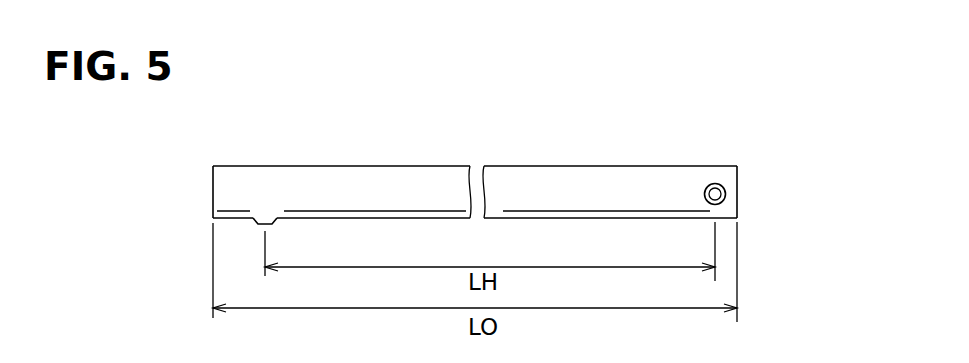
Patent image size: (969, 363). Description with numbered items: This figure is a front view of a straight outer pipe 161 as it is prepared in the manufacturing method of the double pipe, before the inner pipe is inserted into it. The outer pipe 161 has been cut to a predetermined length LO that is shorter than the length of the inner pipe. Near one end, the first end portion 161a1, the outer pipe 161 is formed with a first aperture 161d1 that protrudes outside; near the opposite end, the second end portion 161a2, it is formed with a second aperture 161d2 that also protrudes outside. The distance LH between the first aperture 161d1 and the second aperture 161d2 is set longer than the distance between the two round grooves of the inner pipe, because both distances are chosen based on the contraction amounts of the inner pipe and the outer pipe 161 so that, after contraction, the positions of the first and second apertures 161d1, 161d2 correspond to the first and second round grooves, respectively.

The outer pipe 161 is at (397, 185).
The first end portion 161a1 is at (210, 182).
The second end portion 161a2 is at (737, 195).
The first aperture 161d1 is at (273, 227).
The second aperture 161d2 is at (717, 184).